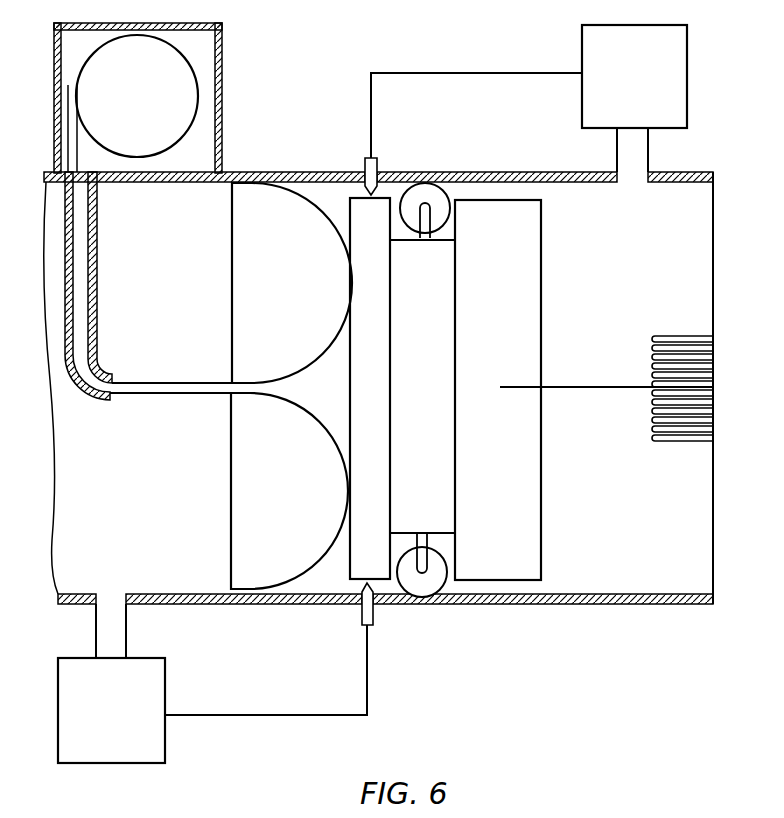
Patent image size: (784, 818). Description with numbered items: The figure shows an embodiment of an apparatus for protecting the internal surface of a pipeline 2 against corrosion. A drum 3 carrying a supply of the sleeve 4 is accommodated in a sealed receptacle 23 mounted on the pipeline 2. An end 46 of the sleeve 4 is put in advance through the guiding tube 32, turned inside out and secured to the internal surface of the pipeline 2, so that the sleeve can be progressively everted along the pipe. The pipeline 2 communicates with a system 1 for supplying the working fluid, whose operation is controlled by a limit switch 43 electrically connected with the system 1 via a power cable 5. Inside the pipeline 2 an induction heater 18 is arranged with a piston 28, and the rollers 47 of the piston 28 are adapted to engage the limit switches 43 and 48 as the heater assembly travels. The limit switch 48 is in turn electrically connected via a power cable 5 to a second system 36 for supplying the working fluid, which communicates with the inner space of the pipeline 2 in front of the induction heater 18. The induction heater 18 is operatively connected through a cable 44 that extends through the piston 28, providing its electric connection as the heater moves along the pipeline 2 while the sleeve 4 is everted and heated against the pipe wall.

The system for supplying the working fluid 1 is at (111, 683).
The pipeline 2 is at (666, 604).
The drum 3 is at (200, 92).
The sleeve 4 is at (155, 395).
The power cable 5 is at (532, 73).
The induction heater 18 is at (532, 559).
The sealed receptacle 23 is at (54, 80).
The piston 28 is at (351, 584).
The guiding tube 32 is at (67, 293).
The system for supplying the working fluid 36 is at (634, 98).
The limit switch 43 is at (374, 618).
The cable 44 is at (583, 388).
The end of the sleeve 46 is at (268, 178).
The rollers 47 is at (431, 586).
The limit switch 48 is at (378, 166).